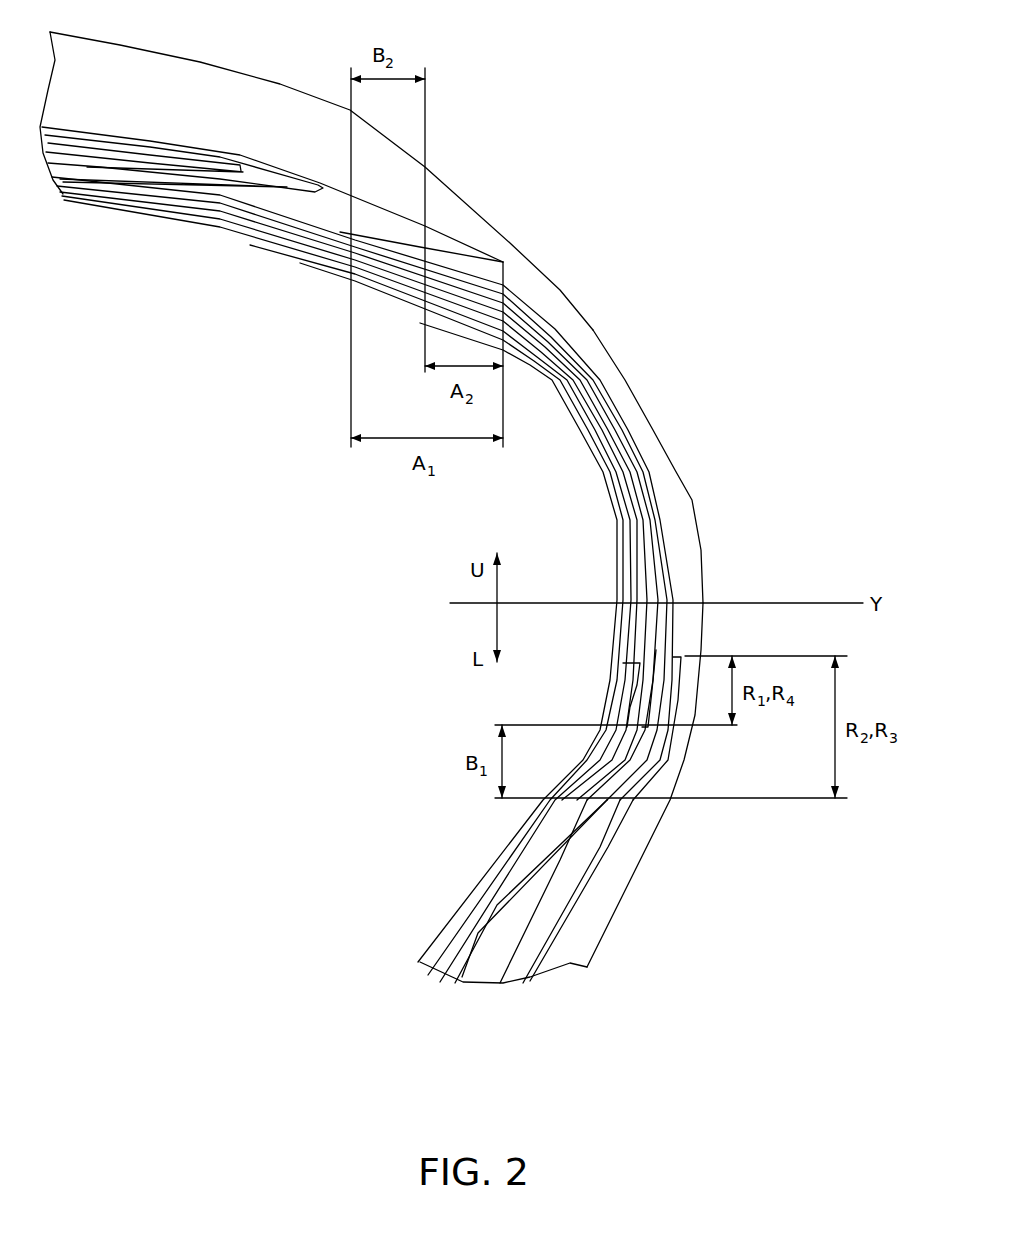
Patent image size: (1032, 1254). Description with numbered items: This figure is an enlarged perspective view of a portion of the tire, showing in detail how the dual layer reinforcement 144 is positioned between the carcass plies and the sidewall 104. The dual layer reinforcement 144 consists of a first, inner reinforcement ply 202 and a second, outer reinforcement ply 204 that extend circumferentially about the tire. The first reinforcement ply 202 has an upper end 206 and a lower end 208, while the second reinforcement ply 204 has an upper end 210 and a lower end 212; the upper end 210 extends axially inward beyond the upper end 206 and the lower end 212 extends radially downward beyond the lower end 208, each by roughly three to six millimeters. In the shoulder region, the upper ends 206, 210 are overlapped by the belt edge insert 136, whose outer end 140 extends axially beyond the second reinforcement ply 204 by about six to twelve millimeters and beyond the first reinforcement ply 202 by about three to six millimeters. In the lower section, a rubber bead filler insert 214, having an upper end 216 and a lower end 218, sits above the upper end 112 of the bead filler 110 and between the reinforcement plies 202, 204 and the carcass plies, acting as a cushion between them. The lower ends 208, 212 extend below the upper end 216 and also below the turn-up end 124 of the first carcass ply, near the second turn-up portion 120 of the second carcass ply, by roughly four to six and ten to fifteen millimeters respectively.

The sidewall 104 is at (742, 534).
The bead filler 110 is at (495, 957).
The upper end of bead filler 112 is at (627, 800).
The second turn-up portion 120 is at (566, 934).
The turn-up end 124 is at (677, 656).
The belt edge insert 136 is at (284, 217).
The outer end of belt edge insert 140 is at (502, 262).
The dual layer reinforcement 144 is at (678, 509).
The first reinforcement ply 202 is at (654, 470).
The second reinforcement ply 204 is at (626, 392).
The upper end of first reinforcement ply 206 is at (425, 267).
The lower end of first reinforcement ply 208 is at (643, 727).
The upper end of second reinforcement ply 210 is at (350, 231).
The lower end of second reinforcement ply 212 is at (593, 819).
The bead filler insert 214 is at (610, 768).
The upper end of bead filler insert 216 is at (627, 661).
The lower end of bead filler insert 218 is at (478, 898).